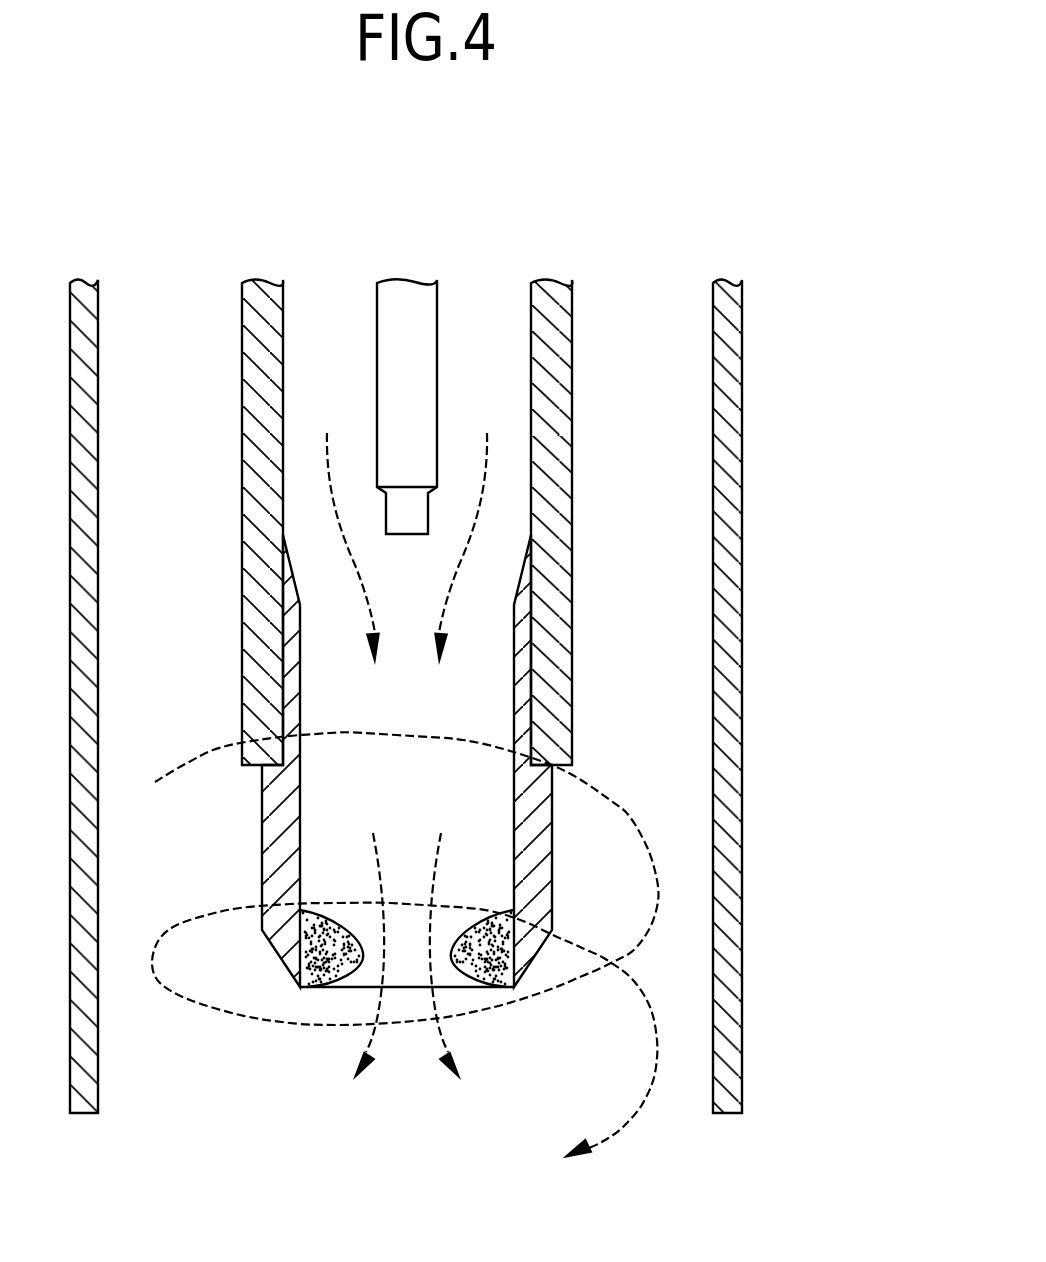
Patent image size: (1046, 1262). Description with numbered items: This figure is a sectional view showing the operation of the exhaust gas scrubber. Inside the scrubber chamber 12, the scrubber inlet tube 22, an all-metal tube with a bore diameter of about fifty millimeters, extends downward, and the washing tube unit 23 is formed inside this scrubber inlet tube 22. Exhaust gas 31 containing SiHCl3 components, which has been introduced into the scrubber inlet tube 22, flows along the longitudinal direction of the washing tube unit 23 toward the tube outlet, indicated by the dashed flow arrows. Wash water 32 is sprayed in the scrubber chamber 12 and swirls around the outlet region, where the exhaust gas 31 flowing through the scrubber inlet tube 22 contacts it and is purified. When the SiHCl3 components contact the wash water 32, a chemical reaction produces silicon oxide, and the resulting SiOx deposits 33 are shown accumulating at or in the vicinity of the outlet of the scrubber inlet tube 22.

The scrubber chamber 12 is at (658, 670).
The scrubber inlet tube 22 is at (573, 500).
The washing tube unit 23 is at (440, 372).
The exhaust gas 31 is at (322, 511).
The wash water 32 is at (657, 880).
The SiOx deposits 33 is at (325, 958).